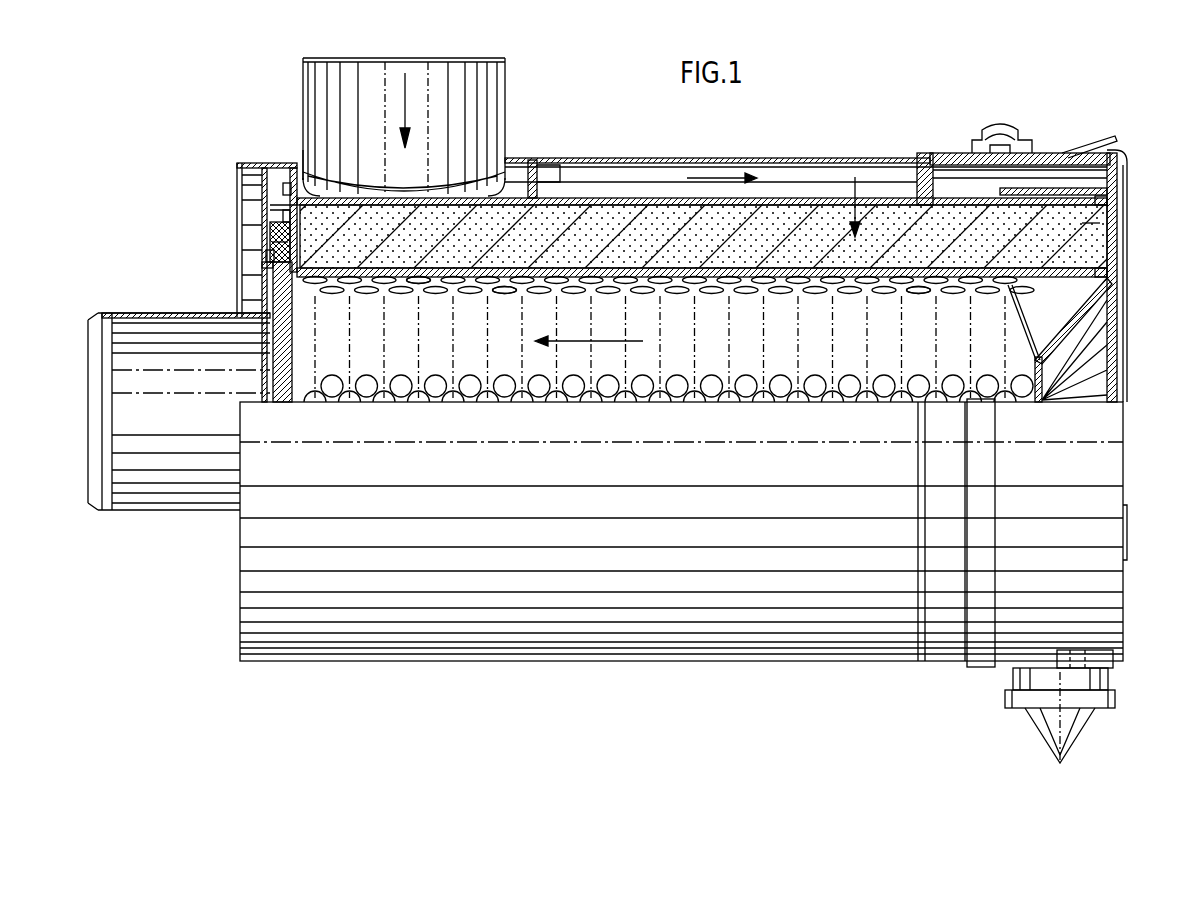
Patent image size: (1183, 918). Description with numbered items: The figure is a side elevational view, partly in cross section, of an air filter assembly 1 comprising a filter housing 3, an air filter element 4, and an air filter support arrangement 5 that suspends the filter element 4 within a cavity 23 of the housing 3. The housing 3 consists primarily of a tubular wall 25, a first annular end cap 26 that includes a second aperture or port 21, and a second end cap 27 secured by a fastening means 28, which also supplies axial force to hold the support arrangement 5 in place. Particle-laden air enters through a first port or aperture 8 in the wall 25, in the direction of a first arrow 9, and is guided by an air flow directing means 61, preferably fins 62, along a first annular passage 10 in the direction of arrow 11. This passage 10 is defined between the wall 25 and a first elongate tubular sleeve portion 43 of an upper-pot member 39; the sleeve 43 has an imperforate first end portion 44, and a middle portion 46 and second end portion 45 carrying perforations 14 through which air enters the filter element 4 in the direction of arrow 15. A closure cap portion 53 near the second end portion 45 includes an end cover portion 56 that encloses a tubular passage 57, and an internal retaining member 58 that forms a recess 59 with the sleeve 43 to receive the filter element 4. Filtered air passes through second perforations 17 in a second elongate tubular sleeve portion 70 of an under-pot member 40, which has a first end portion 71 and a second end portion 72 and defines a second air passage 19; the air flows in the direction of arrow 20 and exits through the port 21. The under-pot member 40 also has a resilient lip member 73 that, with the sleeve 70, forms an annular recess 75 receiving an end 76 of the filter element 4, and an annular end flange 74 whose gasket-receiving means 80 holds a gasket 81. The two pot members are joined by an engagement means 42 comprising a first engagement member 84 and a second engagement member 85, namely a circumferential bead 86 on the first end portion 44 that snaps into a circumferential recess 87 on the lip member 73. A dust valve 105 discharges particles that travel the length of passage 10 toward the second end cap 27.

The air filter assembly 1 is at (610, 397).
The filter housing 3 is at (370, 668).
The air filter element 4 is at (1082, 223).
The air filter support arrangement 5 is at (1121, 160).
The first port or aperture 8 is at (432, 62).
The first arrow 9 is at (405, 112).
The first annular passage 10 is at (625, 172).
The arrow 11 is at (705, 180).
The perforations 14 is at (887, 200).
The arrow 15 is at (853, 180).
The second perforations 17 is at (815, 293).
The second air passage 19 is at (268, 305).
The arrow 20 is at (589, 351).
The second aperture or port 21 is at (88, 358).
The cavity 23 is at (287, 163).
The tubular wall 25 is at (905, 158).
The first annular end cap 26 is at (278, 192).
The second end cap 27 is at (1117, 185).
The fastening means 28 is at (1015, 122).
The upper-pot member 39 is at (1120, 205).
The under-pot member 40 is at (1117, 271).
The engagement means 42 is at (298, 190).
The first elongate tubular sleeve portion 43 is at (788, 202).
The first end portion 44 is at (481, 197).
The second end portion 45 is at (975, 206).
The middle portion 46 is at (630, 197).
The closure cap portion 53 is at (1118, 240).
The end cover portion 56 is at (1118, 255).
The tubular passage 57 is at (1095, 153).
The internal retaining member 58 is at (1068, 307).
The recess 59 is at (1035, 207).
The air flow directing means 61 is at (549, 160).
The fins 62 is at (569, 172).
The second elongate tubular sleeve portion 70 is at (420, 283).
The first end portion 71 is at (492, 293).
The second end portion 72 is at (915, 293).
The resilient lip member 73 is at (330, 187).
The annular end flange 74 is at (293, 215).
The annular recess 75 is at (266, 264).
The end 76 is at (270, 243).
The gasket-receiving means 80 is at (272, 228).
The gasket 81 is at (262, 258).
The first engagement member 84 is at (257, 187).
The second engagement member 85 is at (302, 196).
The circumferential bead 86 is at (290, 204).
The circumferential recess 87 is at (305, 163).
The dust valve 105 is at (1115, 680).